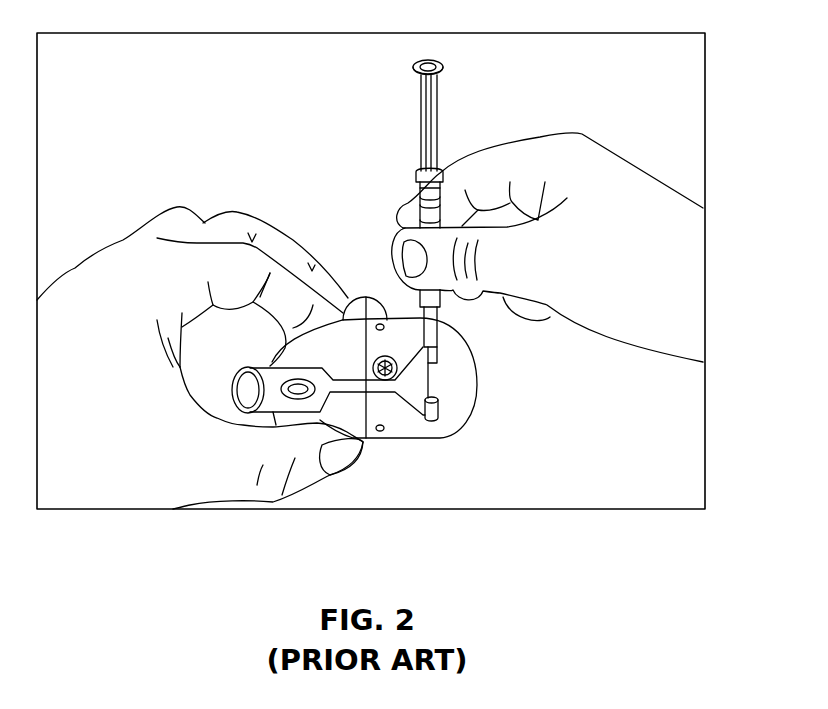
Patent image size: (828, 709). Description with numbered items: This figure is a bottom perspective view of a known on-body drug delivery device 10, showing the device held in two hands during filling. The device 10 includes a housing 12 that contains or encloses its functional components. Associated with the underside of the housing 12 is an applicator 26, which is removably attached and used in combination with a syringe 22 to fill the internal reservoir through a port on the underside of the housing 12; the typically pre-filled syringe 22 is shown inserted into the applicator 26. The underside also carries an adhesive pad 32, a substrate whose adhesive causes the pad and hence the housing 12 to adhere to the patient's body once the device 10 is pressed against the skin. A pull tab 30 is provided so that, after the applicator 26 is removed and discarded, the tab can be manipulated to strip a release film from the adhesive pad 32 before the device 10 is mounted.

The on-body device 10 is at (424, 397).
The housing 12 is at (375, 367).
The adhesive pad 32 is at (407, 430).
The pull tab 30 is at (358, 307).
The applicator 26 is at (440, 412).
The syringe 22 is at (438, 118).